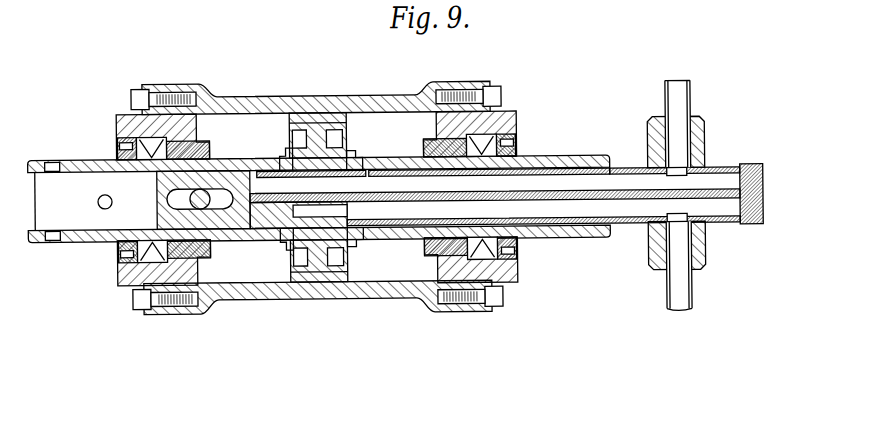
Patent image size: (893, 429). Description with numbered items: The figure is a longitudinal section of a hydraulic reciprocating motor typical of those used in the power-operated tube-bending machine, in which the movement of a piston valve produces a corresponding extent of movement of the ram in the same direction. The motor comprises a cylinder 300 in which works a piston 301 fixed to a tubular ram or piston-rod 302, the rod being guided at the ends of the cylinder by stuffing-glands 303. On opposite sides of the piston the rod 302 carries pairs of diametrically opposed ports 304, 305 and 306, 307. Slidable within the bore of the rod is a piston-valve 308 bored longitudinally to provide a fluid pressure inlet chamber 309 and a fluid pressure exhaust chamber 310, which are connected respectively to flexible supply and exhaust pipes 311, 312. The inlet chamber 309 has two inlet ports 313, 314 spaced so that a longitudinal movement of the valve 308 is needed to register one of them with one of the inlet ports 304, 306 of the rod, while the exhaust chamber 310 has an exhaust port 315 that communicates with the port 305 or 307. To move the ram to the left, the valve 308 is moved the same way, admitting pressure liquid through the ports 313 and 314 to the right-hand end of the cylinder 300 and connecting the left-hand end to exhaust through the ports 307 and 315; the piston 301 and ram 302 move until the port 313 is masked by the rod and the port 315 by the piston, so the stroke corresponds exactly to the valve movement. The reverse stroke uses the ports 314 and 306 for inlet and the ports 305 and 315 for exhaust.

The cylinder 300 is at (254, 125).
The piston 301 is at (343, 129).
The tubular ram or piston-rod 302 is at (70, 160).
The stuffing-glands 303 is at (150, 156).
The port 304 is at (353, 162).
The port 305 is at (357, 238).
The port 306 is at (279, 160).
The port 307 is at (285, 241).
The piston-valve 308 is at (730, 164).
The fluid pressure inlet chamber 309 is at (622, 183).
The fluid pressure exhaust chamber 310 is at (642, 218).
The flexible supply pipe 311 is at (673, 103).
The flexible exhaust pipe 312 is at (677, 301).
The inlet port 313 is at (375, 179).
The inlet port 314 is at (273, 179).
The exhaust port 315 is at (338, 219).